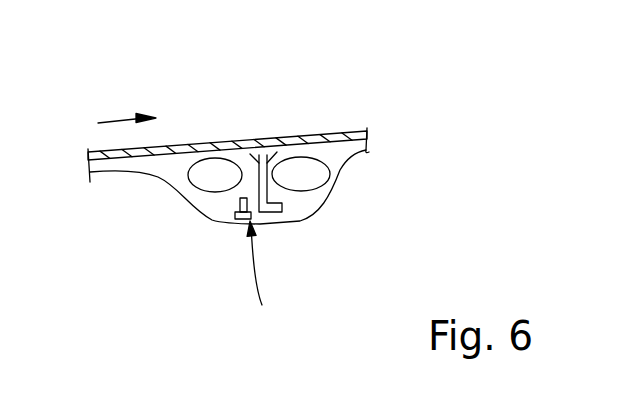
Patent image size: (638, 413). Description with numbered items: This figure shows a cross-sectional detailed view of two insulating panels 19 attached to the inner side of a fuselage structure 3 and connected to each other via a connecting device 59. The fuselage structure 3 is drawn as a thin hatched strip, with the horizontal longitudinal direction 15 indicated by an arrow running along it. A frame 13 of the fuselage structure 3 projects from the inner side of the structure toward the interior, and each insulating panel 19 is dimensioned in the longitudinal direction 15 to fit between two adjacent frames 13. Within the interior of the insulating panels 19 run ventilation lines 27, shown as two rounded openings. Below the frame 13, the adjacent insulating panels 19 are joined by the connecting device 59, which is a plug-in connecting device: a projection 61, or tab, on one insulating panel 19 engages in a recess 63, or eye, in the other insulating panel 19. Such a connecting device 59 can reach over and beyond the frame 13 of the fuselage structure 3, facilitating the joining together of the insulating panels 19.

The fuselage structure 3 is at (327, 139).
The frame 13 is at (267, 190).
The longitudinal direction 15 is at (114, 120).
The insulating panel 19 is at (190, 192).
The ventilation lines 27 is at (308, 168).
The connecting device 59 is at (262, 281).
The projection 61 is at (233, 219).
The recess 63 is at (240, 202).